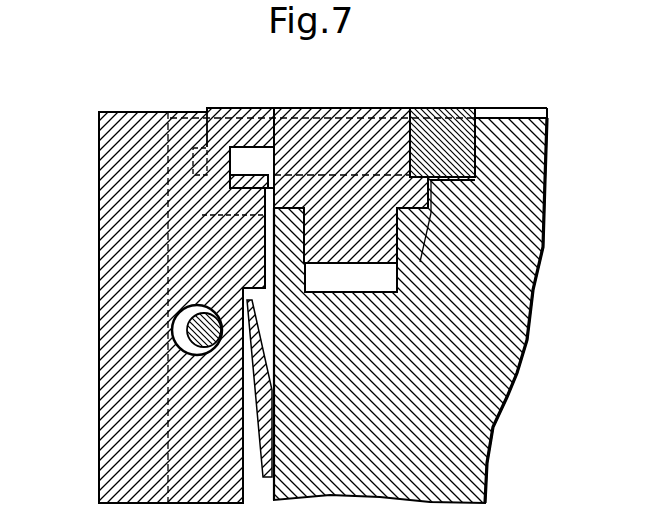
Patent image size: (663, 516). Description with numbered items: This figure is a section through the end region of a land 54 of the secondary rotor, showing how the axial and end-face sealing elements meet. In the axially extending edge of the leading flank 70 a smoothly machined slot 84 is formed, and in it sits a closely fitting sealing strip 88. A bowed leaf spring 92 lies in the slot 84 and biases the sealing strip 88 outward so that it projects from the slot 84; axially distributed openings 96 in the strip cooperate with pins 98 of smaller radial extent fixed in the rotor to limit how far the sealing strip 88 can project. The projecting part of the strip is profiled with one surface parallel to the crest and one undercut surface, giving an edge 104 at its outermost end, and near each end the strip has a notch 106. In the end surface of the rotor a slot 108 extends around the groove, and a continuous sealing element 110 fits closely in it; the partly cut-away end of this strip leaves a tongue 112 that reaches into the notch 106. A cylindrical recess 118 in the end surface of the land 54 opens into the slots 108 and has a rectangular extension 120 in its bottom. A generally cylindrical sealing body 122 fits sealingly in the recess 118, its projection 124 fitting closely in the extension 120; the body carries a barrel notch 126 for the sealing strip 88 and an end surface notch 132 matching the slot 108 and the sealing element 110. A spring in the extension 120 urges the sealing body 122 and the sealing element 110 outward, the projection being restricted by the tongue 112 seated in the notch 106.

The land 54 is at (524, 163).
The leading flank 70 is at (165, 405).
The slot 84 is at (253, 462).
The sealing strip 88 is at (122, 196).
The bowed leaf spring 92 is at (273, 393).
The openings 96 is at (183, 338).
The pins 98 is at (205, 348).
The edge 104 is at (97, 258).
The notch 106 is at (247, 188).
The slots 108 is at (467, 183).
The sealing element 110 is at (449, 118).
The tongue 112 is at (279, 122).
The recess 118 is at (419, 262).
The extension 120 is at (365, 279).
The sealing body 122 is at (432, 214).
The projection 124 is at (388, 248).
The notch 126 is at (271, 147).
The end surface notch 132 is at (406, 131).